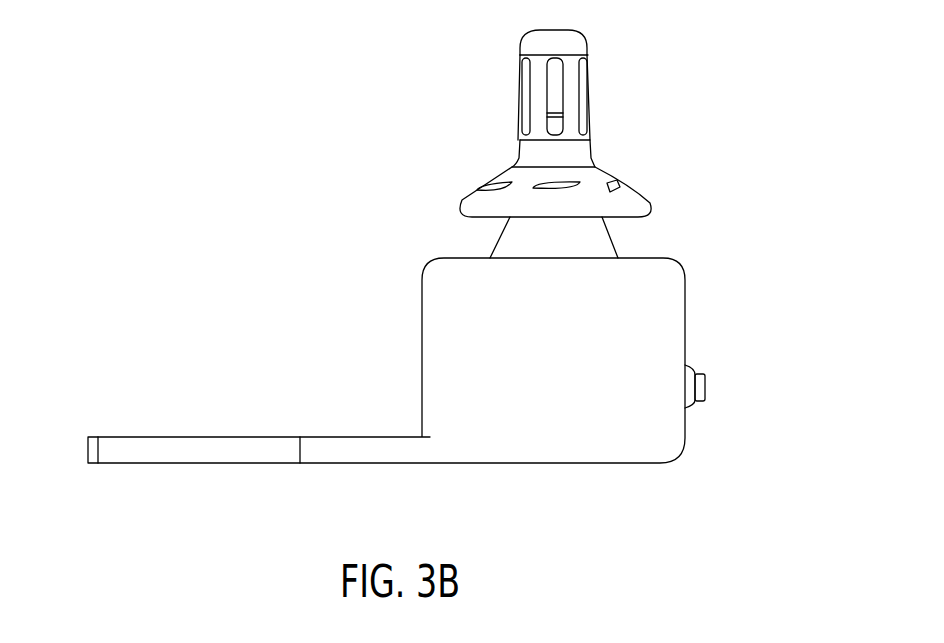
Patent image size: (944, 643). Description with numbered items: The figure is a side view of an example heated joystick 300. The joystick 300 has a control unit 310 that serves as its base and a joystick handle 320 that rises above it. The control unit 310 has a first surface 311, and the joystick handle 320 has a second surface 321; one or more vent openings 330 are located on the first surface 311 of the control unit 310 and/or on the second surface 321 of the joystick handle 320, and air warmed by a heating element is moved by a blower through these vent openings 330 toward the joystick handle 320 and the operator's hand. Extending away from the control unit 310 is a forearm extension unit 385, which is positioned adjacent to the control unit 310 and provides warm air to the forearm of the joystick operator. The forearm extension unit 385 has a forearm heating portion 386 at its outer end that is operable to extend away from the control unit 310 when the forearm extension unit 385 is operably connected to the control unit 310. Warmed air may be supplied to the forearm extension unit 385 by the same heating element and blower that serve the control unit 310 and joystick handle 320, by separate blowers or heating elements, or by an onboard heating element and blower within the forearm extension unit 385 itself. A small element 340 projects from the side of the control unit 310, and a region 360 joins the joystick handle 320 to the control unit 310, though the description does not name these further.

The joystick 300 is at (116, 137).
The control unit 310 is at (660, 443).
The first surface 311 is at (647, 260).
The joystick handle 320 is at (570, 85).
The second surface 321 is at (633, 193).
The vent openings 330 is at (555, 92).
The button 340 is at (705, 386).
The stem 360 is at (515, 238).
The forearm extension unit 385 is at (365, 448).
The forearm heating portion 386 is at (297, 422).